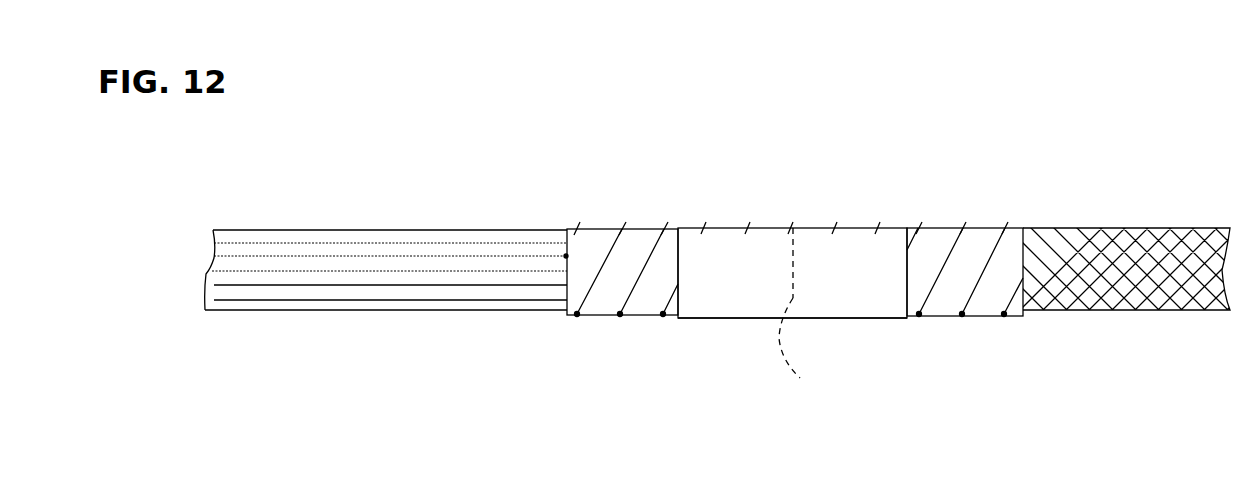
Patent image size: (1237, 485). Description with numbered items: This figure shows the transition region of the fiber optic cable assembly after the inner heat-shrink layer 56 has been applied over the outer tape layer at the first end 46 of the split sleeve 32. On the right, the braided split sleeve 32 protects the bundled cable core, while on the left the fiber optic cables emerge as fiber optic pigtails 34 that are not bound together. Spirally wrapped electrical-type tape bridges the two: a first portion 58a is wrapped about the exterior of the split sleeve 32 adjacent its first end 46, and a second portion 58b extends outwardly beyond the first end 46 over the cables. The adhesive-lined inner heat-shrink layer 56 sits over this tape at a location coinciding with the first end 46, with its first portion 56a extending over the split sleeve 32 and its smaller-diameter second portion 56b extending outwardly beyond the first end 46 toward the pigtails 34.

The split sleeve 32 is at (1117, 227).
The fiber optic pigtails 34 is at (417, 228).
The first end of the split sleeve 46 is at (802, 314).
The inner heat-shrink layer 56 is at (833, 224).
The first portion of the inner heat-shrink layer 56a is at (858, 320).
The second portion of the inner heat-shrink layer 56b is at (728, 320).
The first portion of the outer tape layer 58a is at (993, 227).
The second portion of the outer tape layer 58b is at (625, 228).